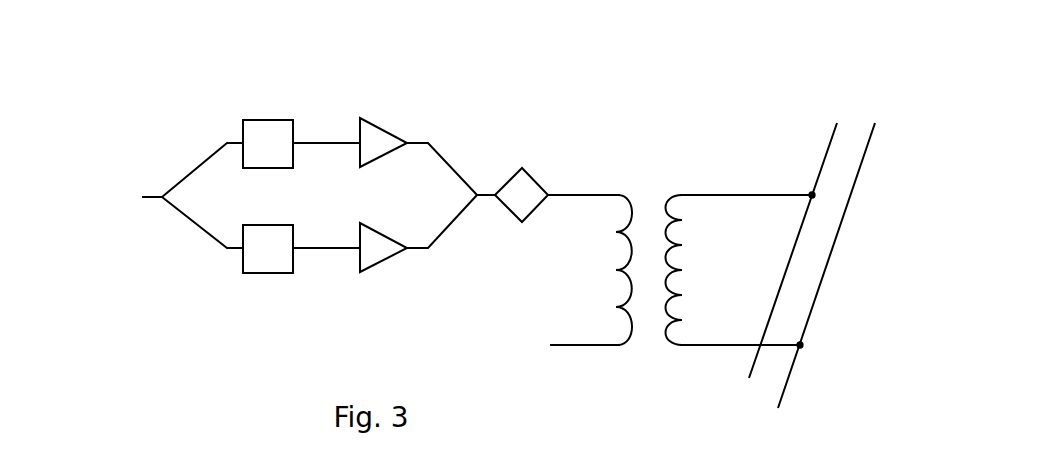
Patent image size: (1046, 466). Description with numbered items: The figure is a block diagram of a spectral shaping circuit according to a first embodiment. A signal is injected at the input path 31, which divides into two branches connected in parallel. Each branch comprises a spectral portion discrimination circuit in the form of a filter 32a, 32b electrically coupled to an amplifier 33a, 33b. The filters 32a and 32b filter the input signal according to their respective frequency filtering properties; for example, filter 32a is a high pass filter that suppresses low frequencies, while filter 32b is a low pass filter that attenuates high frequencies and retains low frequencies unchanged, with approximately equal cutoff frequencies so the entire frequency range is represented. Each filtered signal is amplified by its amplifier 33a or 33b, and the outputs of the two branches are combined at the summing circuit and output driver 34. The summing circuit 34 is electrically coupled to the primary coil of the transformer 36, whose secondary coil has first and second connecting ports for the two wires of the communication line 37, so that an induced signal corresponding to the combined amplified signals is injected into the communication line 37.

The input path 31 is at (98, 211).
The filter 32a is at (243, 125).
The filter 32b is at (243, 260).
The amplifier 33a is at (383, 126).
The amplifier 33b is at (387, 259).
The summing circuit and output driver 34 is at (535, 177).
The transformer 36 is at (593, 353).
The communication line 37 is at (903, 125).